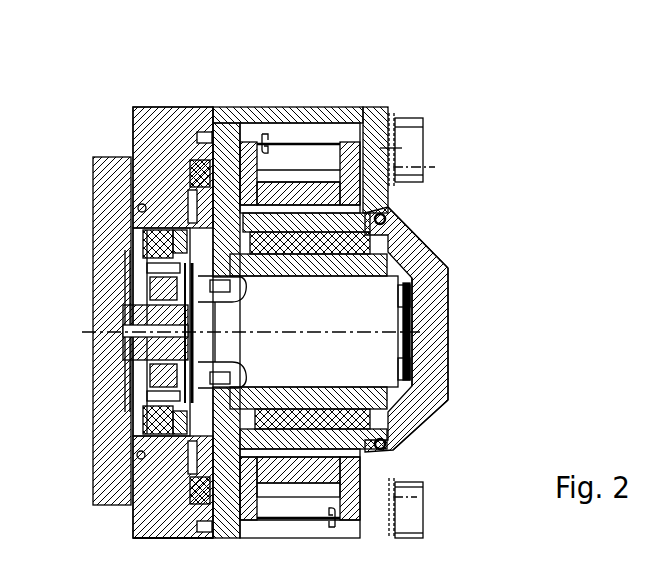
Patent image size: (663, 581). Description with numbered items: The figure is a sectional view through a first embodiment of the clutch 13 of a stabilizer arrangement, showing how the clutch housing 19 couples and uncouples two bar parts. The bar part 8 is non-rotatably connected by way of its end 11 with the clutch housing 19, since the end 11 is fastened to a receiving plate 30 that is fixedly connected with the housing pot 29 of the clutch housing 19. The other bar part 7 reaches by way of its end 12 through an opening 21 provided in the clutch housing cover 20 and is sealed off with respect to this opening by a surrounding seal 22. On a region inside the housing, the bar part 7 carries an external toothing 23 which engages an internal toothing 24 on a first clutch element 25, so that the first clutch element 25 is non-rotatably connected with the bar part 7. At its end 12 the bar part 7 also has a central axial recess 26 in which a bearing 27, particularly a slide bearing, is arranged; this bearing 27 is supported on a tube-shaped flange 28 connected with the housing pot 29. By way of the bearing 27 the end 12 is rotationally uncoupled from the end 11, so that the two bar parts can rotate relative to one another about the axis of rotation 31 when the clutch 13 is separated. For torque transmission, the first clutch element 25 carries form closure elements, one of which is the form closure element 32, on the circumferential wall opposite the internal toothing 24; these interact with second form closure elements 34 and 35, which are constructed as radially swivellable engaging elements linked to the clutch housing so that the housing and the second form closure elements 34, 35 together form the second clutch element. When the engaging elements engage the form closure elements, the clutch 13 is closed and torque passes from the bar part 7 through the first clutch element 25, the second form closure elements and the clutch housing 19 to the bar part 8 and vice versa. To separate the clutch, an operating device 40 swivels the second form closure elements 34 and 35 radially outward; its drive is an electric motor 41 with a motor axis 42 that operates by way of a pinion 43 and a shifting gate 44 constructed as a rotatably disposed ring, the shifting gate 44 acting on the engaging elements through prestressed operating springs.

The bar part 7 is at (433, 256).
The bar part 8 is at (110, 363).
The end 11 is at (92, 180).
The end 12 is at (413, 228).
The clutch 13 is at (373, 92).
The clutch housing 19 is at (160, 107).
The clutch housing cover 20 is at (392, 108).
The opening 21 is at (388, 450).
The seal 22 is at (395, 205).
The external toothing 23 is at (317, 490).
The internal toothing 24 is at (398, 511).
The first clutch element 25 is at (257, 493).
The central axial recess 26 is at (448, 288).
The bearing 27 is at (430, 427).
The tube-shaped flange 28 is at (314, 276).
The housing pot 29 is at (252, 108).
The receiving plate 30 is at (135, 535).
The axis of rotation 31 is at (257, 332).
The form closure element 32 is at (315, 170).
The second form closure element 34 is at (298, 157).
The second form closure element 35 is at (292, 497).
The operating device 40 is at (380, 347).
The motor 41 is at (400, 308).
The motor axis 42 is at (130, 313).
The pinion 43 is at (125, 347).
The shifting gate 44 is at (145, 272).